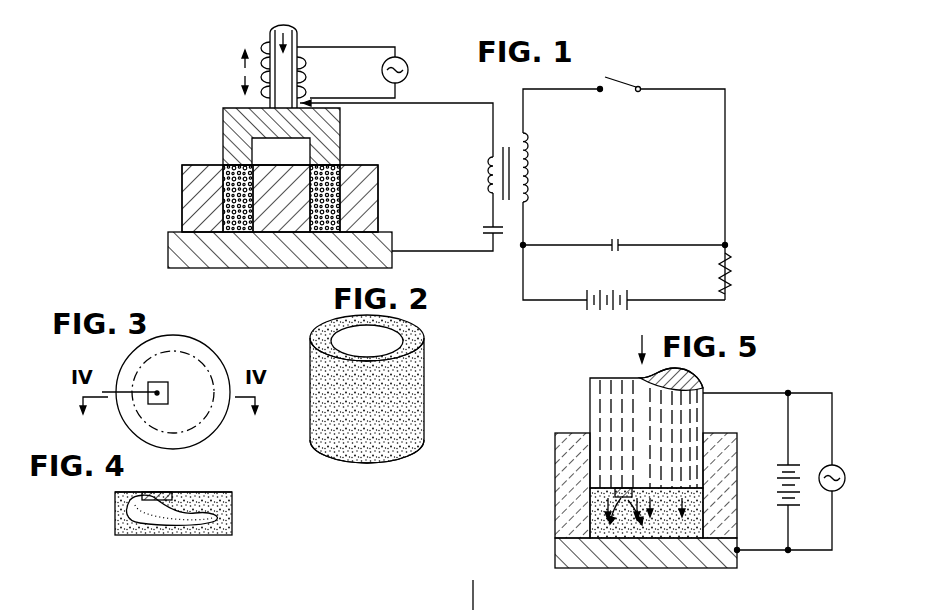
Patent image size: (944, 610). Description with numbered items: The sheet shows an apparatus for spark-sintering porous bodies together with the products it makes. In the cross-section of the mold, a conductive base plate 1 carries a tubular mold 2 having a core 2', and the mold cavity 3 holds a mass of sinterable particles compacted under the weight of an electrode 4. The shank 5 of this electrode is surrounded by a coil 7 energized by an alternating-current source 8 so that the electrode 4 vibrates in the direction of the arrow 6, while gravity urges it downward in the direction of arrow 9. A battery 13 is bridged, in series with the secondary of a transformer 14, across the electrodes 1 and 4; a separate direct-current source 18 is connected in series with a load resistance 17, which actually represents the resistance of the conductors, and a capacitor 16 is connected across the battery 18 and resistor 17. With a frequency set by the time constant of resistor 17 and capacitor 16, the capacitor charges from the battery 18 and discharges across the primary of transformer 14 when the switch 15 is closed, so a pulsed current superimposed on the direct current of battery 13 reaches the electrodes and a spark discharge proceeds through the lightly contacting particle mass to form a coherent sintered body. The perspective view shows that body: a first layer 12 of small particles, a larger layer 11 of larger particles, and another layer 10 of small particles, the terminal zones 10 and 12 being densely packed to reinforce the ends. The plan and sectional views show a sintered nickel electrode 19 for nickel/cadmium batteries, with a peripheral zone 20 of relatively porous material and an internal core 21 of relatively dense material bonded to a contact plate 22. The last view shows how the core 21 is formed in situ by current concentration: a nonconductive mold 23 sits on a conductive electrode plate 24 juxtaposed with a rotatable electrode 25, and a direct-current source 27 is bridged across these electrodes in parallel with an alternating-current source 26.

In FIG. 1, the conductive base plate 1 is at (168, 243).
In FIG. 1, the tubular mold 2 is at (263, 198).
In FIG. 1, the core 2' is at (281, 233).
In FIG. 1, the mold cavity 3 is at (340, 165).
In FIG. 1, the electrode 4 is at (340, 134).
In FIG. 1, the shank 5 is at (297, 36).
In FIG. 1, the arrow 6 is at (243, 72).
In FIG. 1, the coil 7 is at (306, 66).
In FIG. 1, the alternating-current source 8 is at (408, 70).
In FIG. 1, the arrow 9 is at (271, 37).
In FIG. 2, the layer of small-size particles 10 is at (424, 350).
In FIG. 2, the layer of large-size particles 11 is at (424, 392).
In FIG. 2, the first layer of small-size particles 12 is at (424, 440).
In FIG. 1, the battery 13 is at (483, 229).
In FIG. 1, the transformer 14 is at (531, 169).
In FIG. 1, the switch 15 is at (609, 79).
In FIG. 1, the capacitor 16 is at (619, 240).
In FIG. 1, the load resistance 17 is at (732, 282).
In FIG. 1, the direct-current source 18 is at (620, 293).
In FIG. 3, the electrode 19 is at (184, 338).
In FIG. 4, the electrode 19 is at (114, 497).
In FIG. 4, the peripheral zone 20 is at (232, 530).
In FIG. 3, the internal core 21 is at (207, 361).
In FIG. 4, the internal core 21 is at (183, 510).
In FIG. 3, the contact plate 22 is at (168, 390).
In FIG. 4, the contact plate 22 is at (156, 496).
In FIG. 5, the contact plate 22 is at (624, 490).
In FIG. 5, the nonconductive mold 23 is at (556, 506).
In FIG. 5, the conductive electrode plate 24 is at (628, 568).
In FIG. 5, the rotatable electrode 25 is at (603, 437).
In FIG. 5, the alternating-current source 26 is at (844, 480).
In FIG. 5, the direct-current source 27 is at (791, 463).